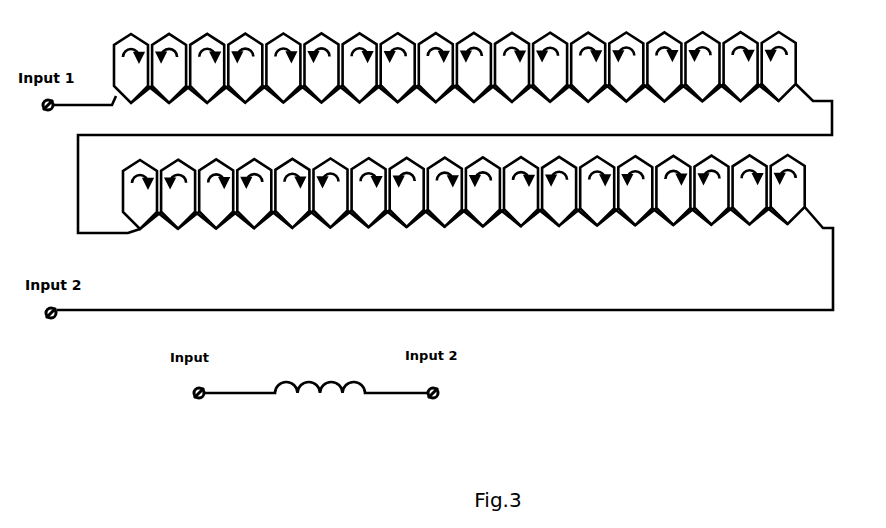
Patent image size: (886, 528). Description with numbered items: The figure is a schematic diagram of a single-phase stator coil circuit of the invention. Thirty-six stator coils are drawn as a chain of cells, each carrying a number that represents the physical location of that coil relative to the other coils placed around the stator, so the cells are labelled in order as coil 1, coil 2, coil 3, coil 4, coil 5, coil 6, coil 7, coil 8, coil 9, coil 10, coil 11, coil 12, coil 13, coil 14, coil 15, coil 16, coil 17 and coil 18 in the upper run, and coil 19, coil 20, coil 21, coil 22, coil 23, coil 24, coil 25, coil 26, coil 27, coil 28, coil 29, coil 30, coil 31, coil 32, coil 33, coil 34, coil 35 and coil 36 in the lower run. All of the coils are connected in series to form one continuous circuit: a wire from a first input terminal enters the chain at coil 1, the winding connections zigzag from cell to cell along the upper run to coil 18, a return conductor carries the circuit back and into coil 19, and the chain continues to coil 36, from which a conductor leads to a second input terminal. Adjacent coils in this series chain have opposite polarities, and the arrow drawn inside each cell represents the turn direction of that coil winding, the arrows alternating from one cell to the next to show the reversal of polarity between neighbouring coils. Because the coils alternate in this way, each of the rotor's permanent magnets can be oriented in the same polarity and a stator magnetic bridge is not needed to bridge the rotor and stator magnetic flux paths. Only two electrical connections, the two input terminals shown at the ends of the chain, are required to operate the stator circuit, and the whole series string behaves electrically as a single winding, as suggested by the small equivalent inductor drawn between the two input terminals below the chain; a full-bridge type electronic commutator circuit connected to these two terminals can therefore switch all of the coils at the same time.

The coil 1 is at (141, 68).
The coil 2 is at (179, 68).
The coil 3 is at (217, 68).
The coil 4 is at (255, 68).
The coil 5 is at (293, 68).
The coil 6 is at (332, 67).
The coil 7 is at (370, 67).
The coil 8 is at (408, 67).
The coil 9 is at (446, 67).
The coil 10 is at (484, 67).
The coil 11 is at (522, 67).
The coil 12 is at (560, 67).
The coil 13 is at (598, 67).
The coil 14 is at (636, 67).
The coil 15 is at (674, 66).
The coil 16 is at (713, 66).
The coil 17 is at (751, 66).
The coil 18 is at (779, 66).
The coil 19 is at (150, 194).
The coil 20 is at (188, 194).
The coil 21 is at (226, 193).
The coil 22 is at (264, 193).
The coil 23 is at (302, 193).
The coil 24 is at (341, 193).
The coil 25 is at (379, 192).
The coil 26 is at (417, 192).
The coil 27 is at (455, 192).
The coil 28 is at (493, 191).
The coil 29 is at (531, 191).
The coil 30 is at (569, 191).
The coil 31 is at (607, 191).
The coil 32 is at (645, 190).
The coil 33 is at (683, 190).
The coil 34 is at (722, 190).
The coil 35 is at (760, 189).
The coil 36 is at (788, 189).